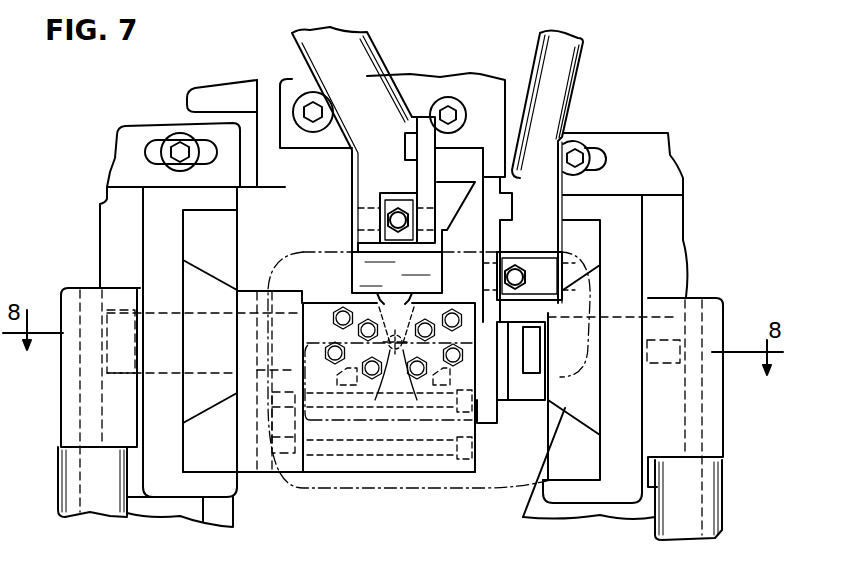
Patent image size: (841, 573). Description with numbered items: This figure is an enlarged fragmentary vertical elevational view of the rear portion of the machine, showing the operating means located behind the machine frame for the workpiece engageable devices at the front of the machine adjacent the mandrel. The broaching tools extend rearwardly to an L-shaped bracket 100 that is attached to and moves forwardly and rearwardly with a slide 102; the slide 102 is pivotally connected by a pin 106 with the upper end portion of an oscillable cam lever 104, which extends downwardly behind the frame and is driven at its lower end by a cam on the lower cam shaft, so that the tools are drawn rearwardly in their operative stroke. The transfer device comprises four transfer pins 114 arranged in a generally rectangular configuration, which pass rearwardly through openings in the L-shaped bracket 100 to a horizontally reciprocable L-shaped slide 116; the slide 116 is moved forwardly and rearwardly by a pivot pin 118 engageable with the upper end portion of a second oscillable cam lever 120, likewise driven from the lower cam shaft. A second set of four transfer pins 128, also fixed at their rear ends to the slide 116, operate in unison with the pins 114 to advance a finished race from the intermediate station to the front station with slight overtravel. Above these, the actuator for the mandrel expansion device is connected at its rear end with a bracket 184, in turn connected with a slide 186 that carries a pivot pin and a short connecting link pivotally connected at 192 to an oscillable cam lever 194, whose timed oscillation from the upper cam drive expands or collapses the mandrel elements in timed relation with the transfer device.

The L-shaped bracket 100 is at (520, 388).
The slide 102 is at (575, 402).
The oscillable cam lever 104 is at (722, 300).
The pin 106 is at (612, 323).
The transfer pins 114 is at (335, 342).
The L-shaped slide 116 is at (395, 466).
The pivot pin 118 is at (187, 383).
The oscillable cam lever 120 is at (70, 293).
The transfer pins 128 is at (415, 370).
The bracket 184 is at (362, 268).
The slide 186 is at (340, 202).
The pivotal connection 192 is at (352, 232).
The oscillable cam lever 194 is at (313, 43).